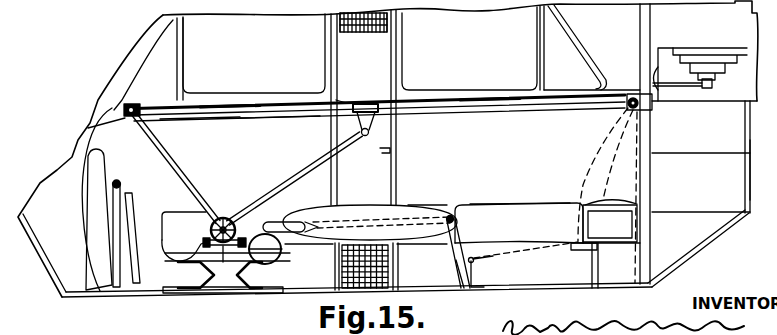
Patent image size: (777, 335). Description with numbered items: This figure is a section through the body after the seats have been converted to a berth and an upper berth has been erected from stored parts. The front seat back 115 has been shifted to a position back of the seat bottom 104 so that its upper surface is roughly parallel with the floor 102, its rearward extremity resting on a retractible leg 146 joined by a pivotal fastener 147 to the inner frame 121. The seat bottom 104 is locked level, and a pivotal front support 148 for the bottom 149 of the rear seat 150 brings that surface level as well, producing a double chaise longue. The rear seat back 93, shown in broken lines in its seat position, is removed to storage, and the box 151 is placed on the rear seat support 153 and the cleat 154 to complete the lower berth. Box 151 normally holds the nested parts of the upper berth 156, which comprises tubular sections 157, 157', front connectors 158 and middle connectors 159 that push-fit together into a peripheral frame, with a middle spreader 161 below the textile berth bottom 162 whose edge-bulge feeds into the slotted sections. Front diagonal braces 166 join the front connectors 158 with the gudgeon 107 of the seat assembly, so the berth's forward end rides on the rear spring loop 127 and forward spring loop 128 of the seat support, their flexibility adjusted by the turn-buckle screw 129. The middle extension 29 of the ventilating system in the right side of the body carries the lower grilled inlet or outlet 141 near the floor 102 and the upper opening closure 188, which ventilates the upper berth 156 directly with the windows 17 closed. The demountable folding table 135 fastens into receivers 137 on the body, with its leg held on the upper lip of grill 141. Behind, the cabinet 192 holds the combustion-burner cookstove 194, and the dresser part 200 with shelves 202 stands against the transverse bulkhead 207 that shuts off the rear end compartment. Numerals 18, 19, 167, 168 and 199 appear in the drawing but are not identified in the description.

The windows 17 is at (255, 67).
The window with brace 18 is at (562, 95).
The door opening 19 is at (363, 98).
The middle extension of the ventilating system 29 is at (331, 27).
The rear seat back 93 is at (83, 208).
The floor 102 is at (540, 289).
The seat bottom 104 is at (244, 210).
The gudgeon 107 is at (210, 228).
The seat back 115 is at (421, 190).
The inner frame 121 is at (388, 228).
The rear spring loop 127 is at (283, 256).
The forward spring loop 128 is at (143, 272).
The turn-buckle screw 129 is at (220, 277).
The demountable folding table 135 is at (125, 195).
The receivers 137 is at (400, 147).
The grill 141 is at (390, 279).
The retractible leg 146 is at (452, 254).
The pivotal fastener 147 is at (449, 214).
The pivotal front support 148 is at (476, 273).
The bottom 149 is at (525, 233).
The rear seat 150 is at (535, 204).
The box 151 is at (620, 235).
The rear seat support 153 is at (585, 255).
The cleat 154 is at (610, 265).
The upper berth 156 is at (316, 118).
The tubular section 157 is at (226, 92).
The tubular section 157' is at (490, 121).
The front connectors 158 is at (131, 105).
The middle connectors 159 is at (336, 100).
The middle spreader 161 is at (371, 133).
The textile berth bottom 162 is at (190, 121).
The front diagonal braces 166 is at (167, 171).
The rear arm 167 is at (284, 192).
The rear hub 168 is at (630, 95).
The upper opening closure 188 is at (388, 24).
The cabinet 192 is at (702, 54).
The combustion-burner cookstove 194 is at (732, 64).
The stepped bracket 199 is at (706, 78).
The dresser part 200 is at (705, 188).
The shelves 202 is at (672, 216).
The transverse bulkhead 207 is at (756, 172).